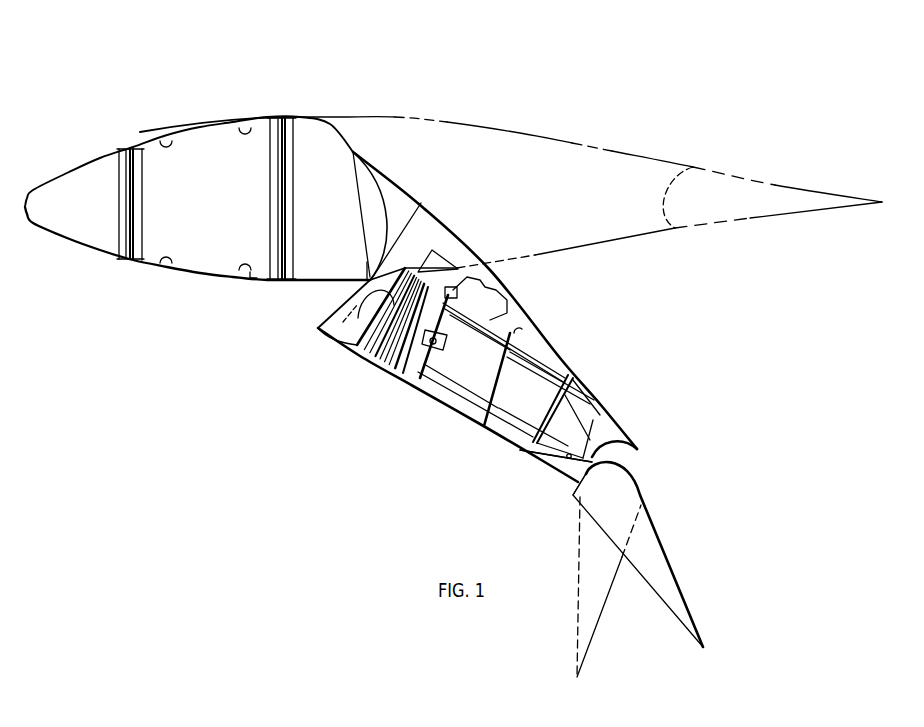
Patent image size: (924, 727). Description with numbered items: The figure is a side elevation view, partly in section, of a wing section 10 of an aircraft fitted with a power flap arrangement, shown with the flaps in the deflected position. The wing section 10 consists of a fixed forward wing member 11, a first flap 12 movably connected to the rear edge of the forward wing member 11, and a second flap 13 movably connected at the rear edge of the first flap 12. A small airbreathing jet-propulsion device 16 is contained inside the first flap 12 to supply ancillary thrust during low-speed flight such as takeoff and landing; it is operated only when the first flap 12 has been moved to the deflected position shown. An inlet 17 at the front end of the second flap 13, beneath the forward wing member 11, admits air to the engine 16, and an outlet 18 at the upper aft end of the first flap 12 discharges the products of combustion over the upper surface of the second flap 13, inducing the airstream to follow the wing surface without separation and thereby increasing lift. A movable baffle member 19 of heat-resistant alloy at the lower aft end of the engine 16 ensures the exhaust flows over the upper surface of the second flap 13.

The wing section 10 is at (206, 277).
The fixed forward wing member 11 is at (205, 124).
The first flap 12 is at (470, 420).
The second flap 13 is at (653, 522).
The jet-propulsion device 16 is at (437, 375).
The inlet 17 is at (355, 298).
The outlet 18 is at (615, 459).
The movable baffle member 19 is at (582, 453).